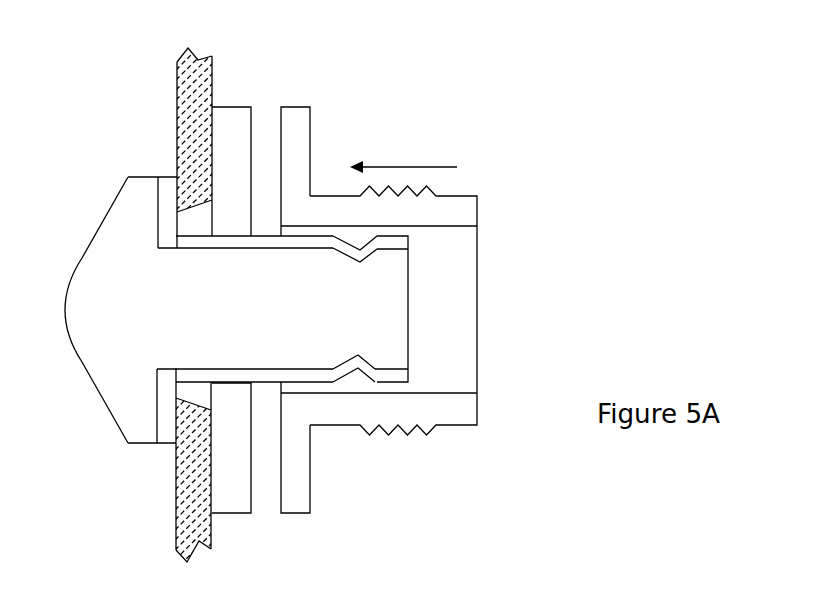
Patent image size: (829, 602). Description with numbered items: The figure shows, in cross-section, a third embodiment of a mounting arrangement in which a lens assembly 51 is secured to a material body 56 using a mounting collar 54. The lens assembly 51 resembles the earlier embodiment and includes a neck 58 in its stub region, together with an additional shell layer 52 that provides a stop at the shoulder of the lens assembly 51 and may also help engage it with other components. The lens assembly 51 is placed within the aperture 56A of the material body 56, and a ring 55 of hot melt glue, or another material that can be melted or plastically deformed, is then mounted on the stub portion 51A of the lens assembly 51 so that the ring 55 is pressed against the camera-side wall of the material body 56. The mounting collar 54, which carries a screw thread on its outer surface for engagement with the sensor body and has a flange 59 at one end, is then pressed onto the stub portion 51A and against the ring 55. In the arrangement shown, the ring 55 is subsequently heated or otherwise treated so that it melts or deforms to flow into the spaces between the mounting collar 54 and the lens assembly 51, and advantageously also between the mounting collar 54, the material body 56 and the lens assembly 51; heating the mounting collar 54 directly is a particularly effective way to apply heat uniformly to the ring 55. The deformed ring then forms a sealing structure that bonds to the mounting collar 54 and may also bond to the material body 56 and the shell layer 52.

The lens assembly 51 is at (93, 157).
The stub portion 51A is at (344, 294).
The shell layer 52 is at (161, 171).
The mounting collar 54 is at (480, 445).
The ring 55 is at (248, 113).
The material body 56 is at (221, 78).
The aperture 56A is at (224, 402).
The neck 58 is at (369, 349).
The flange 59 is at (305, 130).